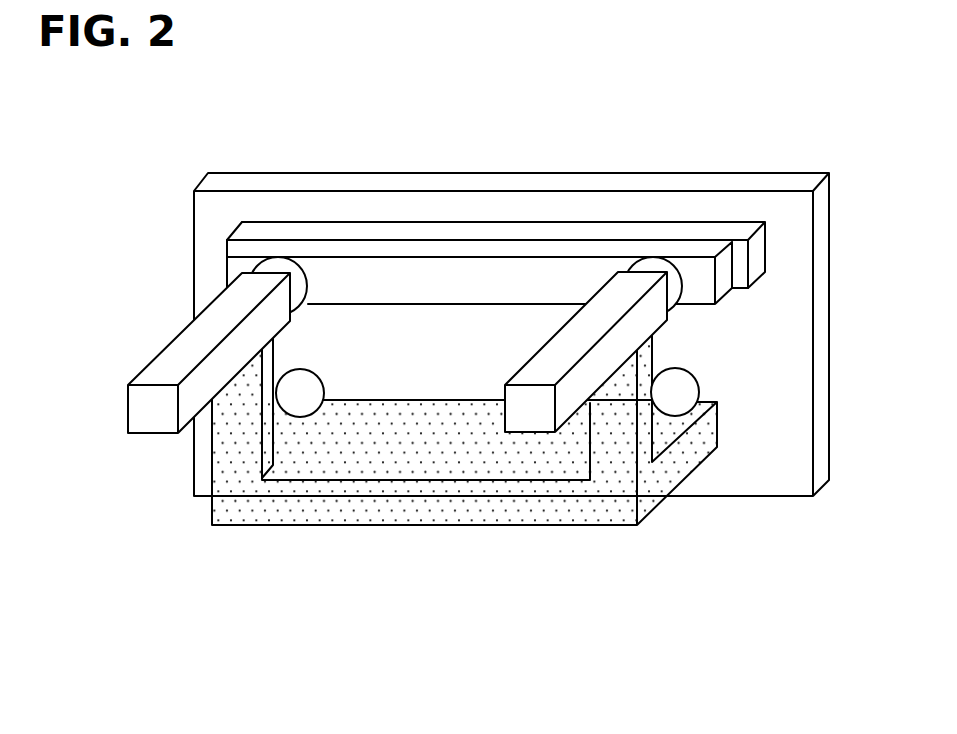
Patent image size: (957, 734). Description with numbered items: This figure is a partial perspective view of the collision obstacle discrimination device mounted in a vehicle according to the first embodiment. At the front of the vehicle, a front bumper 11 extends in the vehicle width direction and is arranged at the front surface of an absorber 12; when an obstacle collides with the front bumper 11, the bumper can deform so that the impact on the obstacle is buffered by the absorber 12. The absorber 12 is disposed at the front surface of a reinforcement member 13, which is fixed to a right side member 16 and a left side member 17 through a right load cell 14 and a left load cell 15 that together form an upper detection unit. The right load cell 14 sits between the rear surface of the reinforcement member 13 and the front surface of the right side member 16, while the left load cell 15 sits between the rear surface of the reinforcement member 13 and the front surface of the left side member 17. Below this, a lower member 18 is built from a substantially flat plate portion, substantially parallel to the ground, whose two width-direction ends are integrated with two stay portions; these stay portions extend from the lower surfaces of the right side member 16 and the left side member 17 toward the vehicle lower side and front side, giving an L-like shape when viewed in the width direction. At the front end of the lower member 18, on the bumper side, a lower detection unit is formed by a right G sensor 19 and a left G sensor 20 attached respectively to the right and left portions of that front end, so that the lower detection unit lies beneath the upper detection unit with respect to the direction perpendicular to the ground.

The front bumper 11 is at (712, 492).
The absorber 12 is at (757, 250).
The reinforcement member 13 is at (427, 273).
The right load cell 14 is at (650, 267).
The left load cell 15 is at (281, 266).
The right side member 16 is at (532, 425).
The left side member 17 is at (138, 408).
The lower member 18 is at (370, 515).
The right G sensor 19 is at (682, 393).
The left G sensor 20 is at (303, 408).